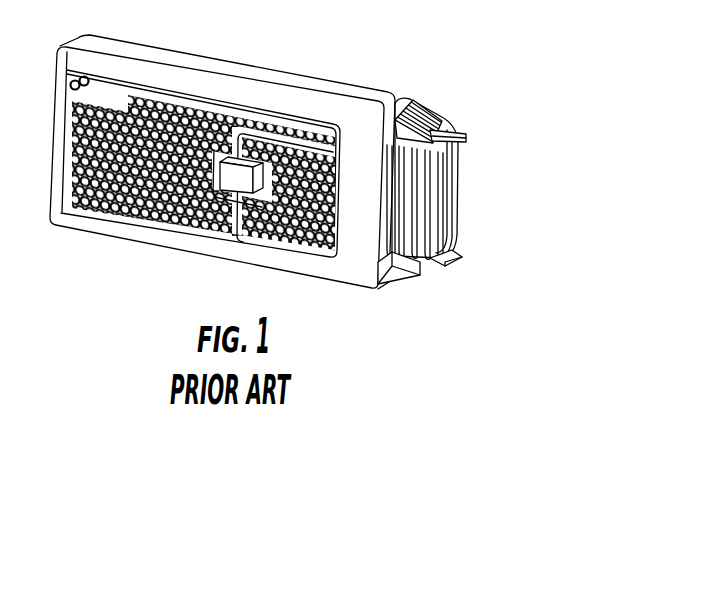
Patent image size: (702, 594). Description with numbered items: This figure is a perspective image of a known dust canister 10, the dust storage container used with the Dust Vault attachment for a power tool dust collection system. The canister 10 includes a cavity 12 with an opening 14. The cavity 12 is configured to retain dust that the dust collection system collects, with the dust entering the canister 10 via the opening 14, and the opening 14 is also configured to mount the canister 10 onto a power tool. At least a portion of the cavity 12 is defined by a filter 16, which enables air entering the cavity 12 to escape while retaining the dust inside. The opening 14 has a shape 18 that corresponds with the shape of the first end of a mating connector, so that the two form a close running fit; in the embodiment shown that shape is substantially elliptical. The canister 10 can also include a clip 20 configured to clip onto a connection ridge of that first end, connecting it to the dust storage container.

The dust canister 10 is at (370, 53).
The cavity 12 is at (492, 179).
The opening 14 is at (492, 179).
The filter 16 is at (287, 220).
The shape 18 is at (465, 184).
The clip 20 is at (392, 292).